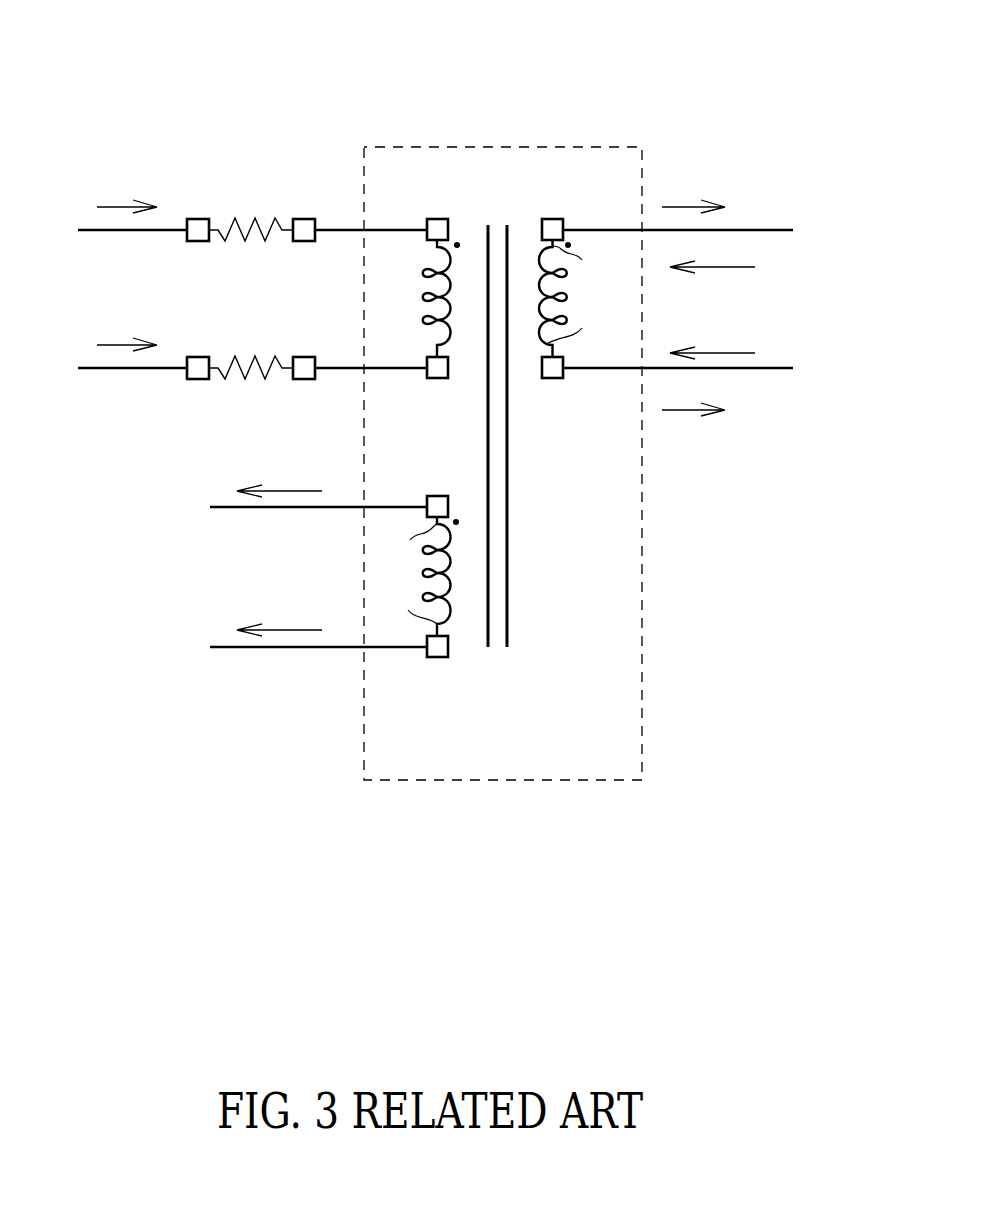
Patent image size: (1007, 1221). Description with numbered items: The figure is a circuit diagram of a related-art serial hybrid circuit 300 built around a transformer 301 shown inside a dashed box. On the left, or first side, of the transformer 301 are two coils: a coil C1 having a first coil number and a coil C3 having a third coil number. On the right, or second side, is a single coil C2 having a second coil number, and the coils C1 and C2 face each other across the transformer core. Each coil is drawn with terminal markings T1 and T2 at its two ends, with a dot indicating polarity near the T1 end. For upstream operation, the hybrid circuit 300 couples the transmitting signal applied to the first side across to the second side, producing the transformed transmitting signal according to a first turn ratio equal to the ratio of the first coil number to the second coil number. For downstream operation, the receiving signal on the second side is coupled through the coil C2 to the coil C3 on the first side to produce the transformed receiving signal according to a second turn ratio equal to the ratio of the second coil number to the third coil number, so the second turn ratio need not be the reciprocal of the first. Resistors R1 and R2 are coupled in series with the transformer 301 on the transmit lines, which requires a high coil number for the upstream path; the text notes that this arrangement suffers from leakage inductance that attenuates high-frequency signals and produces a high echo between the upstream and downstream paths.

The hybrid circuit 300 is at (712, 82).
The transformer 301 is at (503, 147).
The resistor R1 is at (251, 214).
The resistor R2 is at (251, 352).
The coil C1 is at (448, 328).
The coil C2 is at (541, 328).
The coil C3 is at (450, 610).
The coil terminal T1 is at (437, 246).
The coil terminal T2 is at (437, 343).